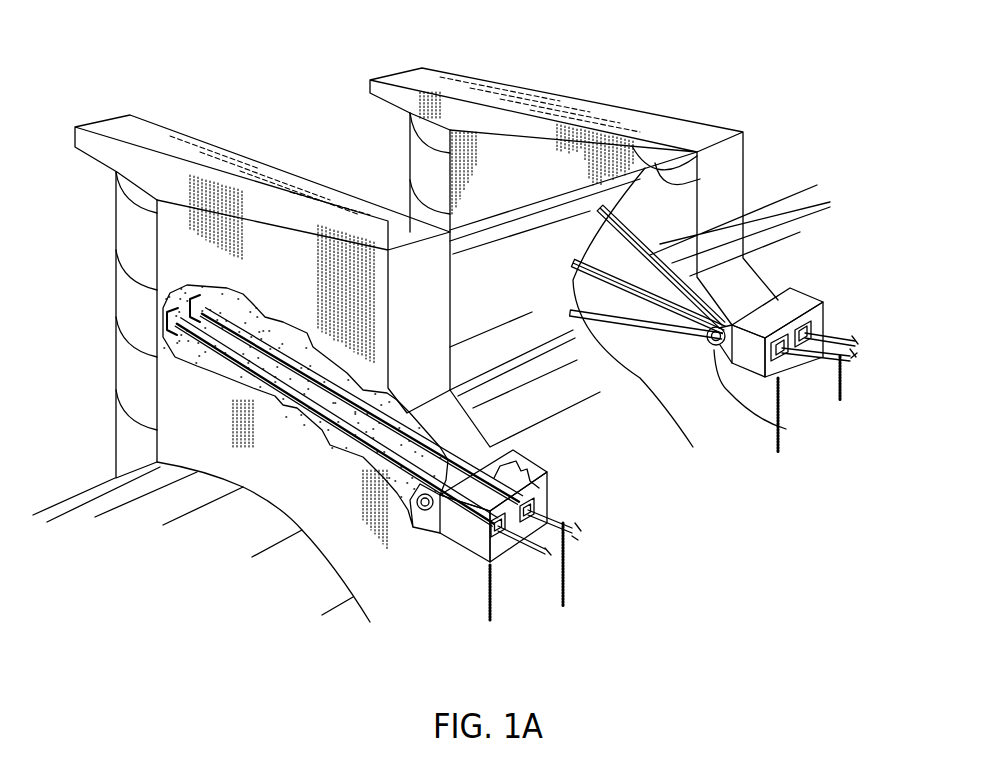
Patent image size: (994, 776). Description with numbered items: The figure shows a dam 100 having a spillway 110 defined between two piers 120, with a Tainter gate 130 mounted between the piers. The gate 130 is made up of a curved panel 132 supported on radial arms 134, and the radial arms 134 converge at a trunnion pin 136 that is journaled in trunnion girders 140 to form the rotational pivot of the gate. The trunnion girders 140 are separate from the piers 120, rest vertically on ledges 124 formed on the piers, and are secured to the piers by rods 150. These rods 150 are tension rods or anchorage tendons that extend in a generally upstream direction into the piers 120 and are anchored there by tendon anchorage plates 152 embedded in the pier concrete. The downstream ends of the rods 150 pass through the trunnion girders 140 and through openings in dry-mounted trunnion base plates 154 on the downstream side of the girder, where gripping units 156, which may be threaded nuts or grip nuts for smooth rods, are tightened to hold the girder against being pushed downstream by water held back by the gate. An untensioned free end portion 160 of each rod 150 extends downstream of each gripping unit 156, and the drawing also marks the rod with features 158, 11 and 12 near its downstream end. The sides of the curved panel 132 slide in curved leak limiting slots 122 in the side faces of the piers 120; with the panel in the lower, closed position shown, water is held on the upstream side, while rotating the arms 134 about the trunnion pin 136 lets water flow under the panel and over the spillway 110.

The dam 100 is at (775, 62).
The spillway 110 is at (662, 432).
The piers 120 is at (241, 131).
The curved leak limiting slots 122 is at (700, 179).
The ledges 124 is at (795, 382).
The Tainter gate 130 is at (491, 185).
The curved panel 132 is at (546, 306).
The radial arms 134 is at (795, 221).
The trunnion pin 136 is at (786, 429).
The trunnion girders 140 is at (798, 297).
The rods 150 is at (237, 386).
The tendon anchorage plates 152 is at (197, 337).
The trunnion base plates 154 is at (544, 490).
The gripping units 156 is at (534, 509).
The lower rod 158 is at (184, 344).
The free end portion 160 is at (832, 368).
The pin end 11 is at (858, 340).
The pin tip 12 is at (853, 352).